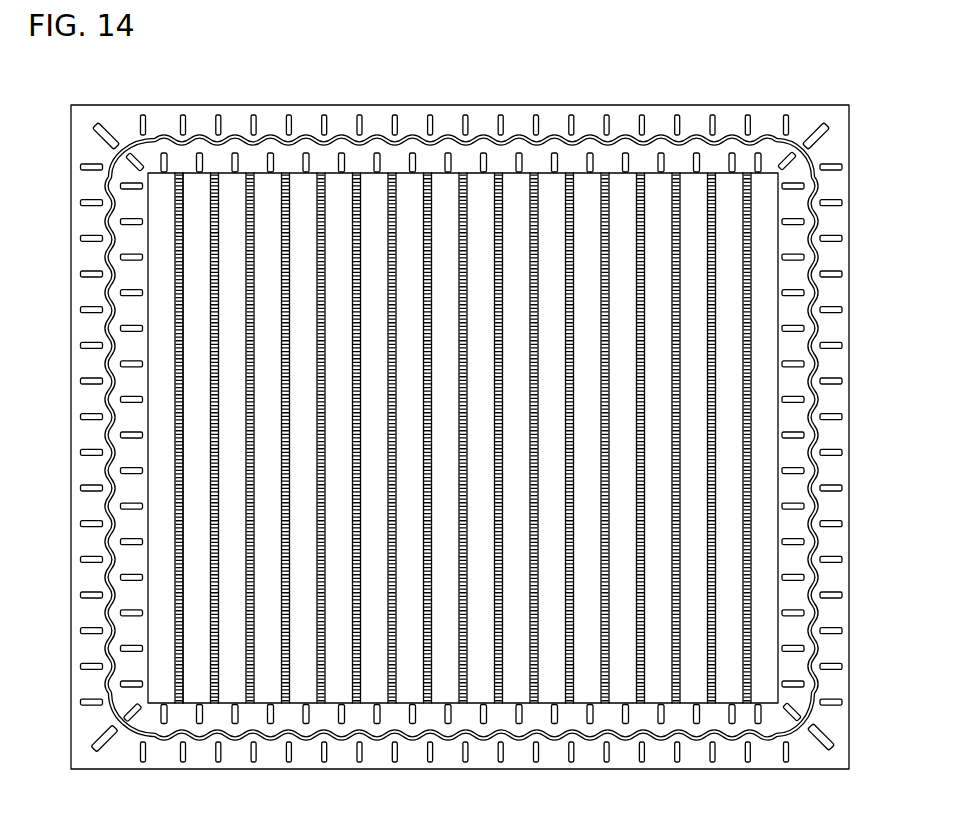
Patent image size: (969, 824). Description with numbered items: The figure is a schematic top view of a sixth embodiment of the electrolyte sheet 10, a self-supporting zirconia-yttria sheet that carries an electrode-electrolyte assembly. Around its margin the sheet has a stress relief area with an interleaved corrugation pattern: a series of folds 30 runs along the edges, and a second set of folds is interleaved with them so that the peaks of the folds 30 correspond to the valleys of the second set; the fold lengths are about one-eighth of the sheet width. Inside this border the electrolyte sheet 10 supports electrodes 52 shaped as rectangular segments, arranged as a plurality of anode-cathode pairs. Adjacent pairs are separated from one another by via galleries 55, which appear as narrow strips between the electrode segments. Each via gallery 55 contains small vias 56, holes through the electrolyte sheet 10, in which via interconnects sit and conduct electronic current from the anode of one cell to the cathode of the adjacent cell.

The electrolyte sheet 10 is at (687, 84).
The folds 30 is at (492, 414).
The electrode 52 is at (158, 185).
The via gallery 55 is at (183, 687).
The vias 56 is at (184, 689).